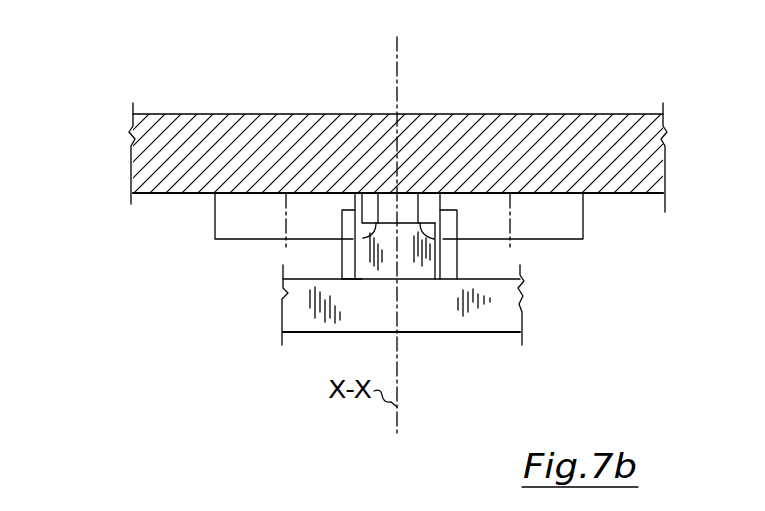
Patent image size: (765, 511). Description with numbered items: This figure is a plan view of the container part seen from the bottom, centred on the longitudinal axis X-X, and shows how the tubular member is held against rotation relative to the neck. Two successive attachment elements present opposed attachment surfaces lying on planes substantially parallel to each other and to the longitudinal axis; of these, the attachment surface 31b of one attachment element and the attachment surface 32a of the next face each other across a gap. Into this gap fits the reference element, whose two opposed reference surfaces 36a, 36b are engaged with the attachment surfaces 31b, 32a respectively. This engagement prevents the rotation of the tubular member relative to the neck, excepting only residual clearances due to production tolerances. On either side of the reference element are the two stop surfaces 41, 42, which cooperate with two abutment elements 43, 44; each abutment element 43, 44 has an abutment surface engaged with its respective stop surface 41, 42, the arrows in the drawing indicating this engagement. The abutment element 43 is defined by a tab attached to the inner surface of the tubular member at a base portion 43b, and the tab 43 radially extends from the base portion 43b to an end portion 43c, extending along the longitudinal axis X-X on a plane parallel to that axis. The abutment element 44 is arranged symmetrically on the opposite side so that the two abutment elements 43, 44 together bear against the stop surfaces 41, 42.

The attachment surface 31b is at (372, 222).
The attachment surface 32a is at (497, 193).
The reference surface 36a is at (378, 215).
The reference surface 36b is at (435, 212).
The stop surface 41 is at (256, 208).
The stop surface 42 is at (498, 210).
The abutment element 43 is at (328, 248).
The base portion 43b is at (343, 270).
The end portion 43c is at (358, 207).
The abutment element 44 is at (473, 257).